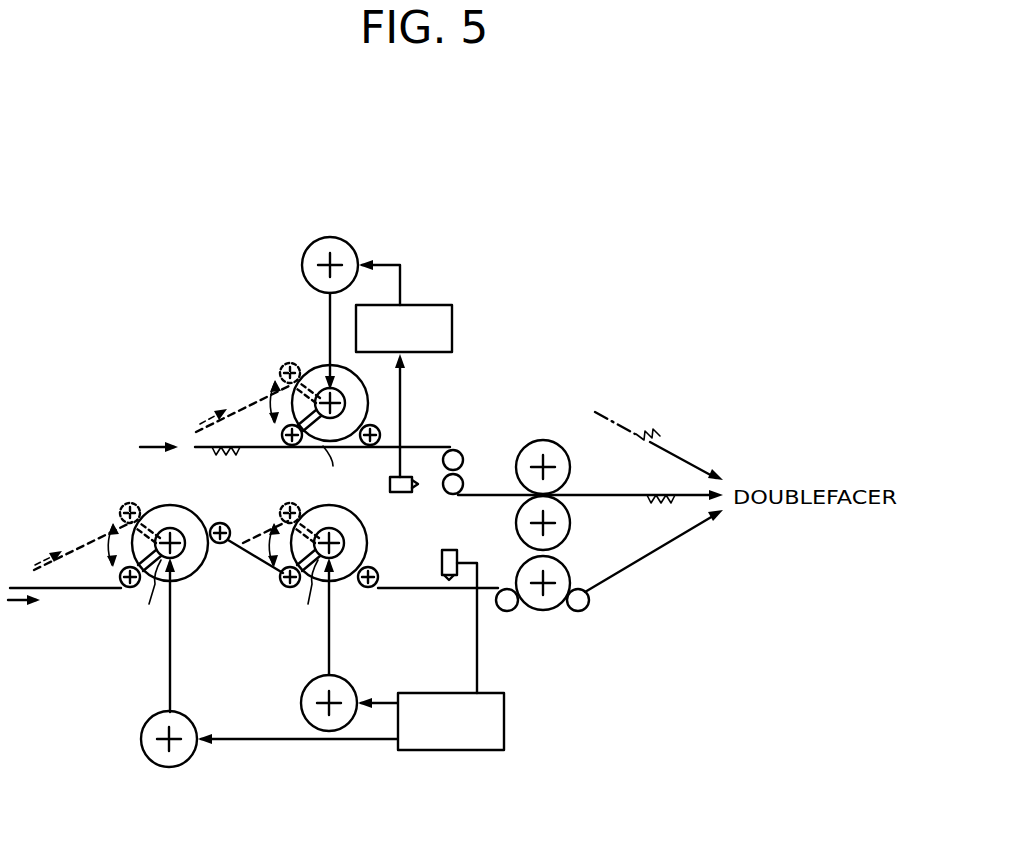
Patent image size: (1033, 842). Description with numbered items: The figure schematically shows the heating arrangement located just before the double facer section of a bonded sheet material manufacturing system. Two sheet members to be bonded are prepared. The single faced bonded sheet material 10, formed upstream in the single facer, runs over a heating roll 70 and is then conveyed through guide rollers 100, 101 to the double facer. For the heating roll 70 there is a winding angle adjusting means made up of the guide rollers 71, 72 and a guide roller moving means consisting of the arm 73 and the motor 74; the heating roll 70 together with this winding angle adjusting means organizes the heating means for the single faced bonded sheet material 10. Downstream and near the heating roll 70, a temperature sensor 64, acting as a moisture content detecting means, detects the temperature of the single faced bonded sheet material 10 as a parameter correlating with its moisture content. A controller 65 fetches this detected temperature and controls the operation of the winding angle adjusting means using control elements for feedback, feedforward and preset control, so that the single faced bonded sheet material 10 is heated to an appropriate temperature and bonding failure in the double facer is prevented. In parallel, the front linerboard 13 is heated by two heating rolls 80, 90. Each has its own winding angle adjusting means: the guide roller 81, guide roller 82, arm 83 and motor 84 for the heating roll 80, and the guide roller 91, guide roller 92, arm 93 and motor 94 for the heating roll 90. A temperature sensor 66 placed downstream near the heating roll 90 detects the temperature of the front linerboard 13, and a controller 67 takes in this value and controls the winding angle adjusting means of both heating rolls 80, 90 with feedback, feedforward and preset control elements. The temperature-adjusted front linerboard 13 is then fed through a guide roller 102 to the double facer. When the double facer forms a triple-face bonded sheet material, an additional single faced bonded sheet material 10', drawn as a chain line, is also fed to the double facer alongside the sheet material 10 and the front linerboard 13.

The single faced bonded sheet material 10 is at (295, 444).
The single faced bonded sheet material 10' is at (659, 433).
The front linerboard 13 is at (63, 590).
The temperature sensor 64 is at (404, 493).
The controller 65 is at (444, 305).
The temperature sensor 66 is at (452, 550).
The controller 67 is at (505, 720).
The heating roll 70 is at (369, 392).
The guide roller 71 is at (291, 446).
The guide roller 72 is at (381, 432).
The arm 73 is at (340, 468).
The motor 74 is at (320, 240).
The heating roll 80 is at (167, 506).
The guide roller 81 is at (129, 588).
The guide roller 82 is at (223, 544).
The arm 83 is at (147, 597).
The motor 84 is at (146, 750).
The heating roll 90 is at (367, 540).
The guide roller 91 is at (290, 588).
The guide roller 92 is at (368, 588).
The arm 93 is at (304, 597).
The motor 94 is at (302, 698).
The guide roller 100 is at (570, 466).
The guide roller 101 is at (570, 523).
The guide roller 102 is at (548, 611).